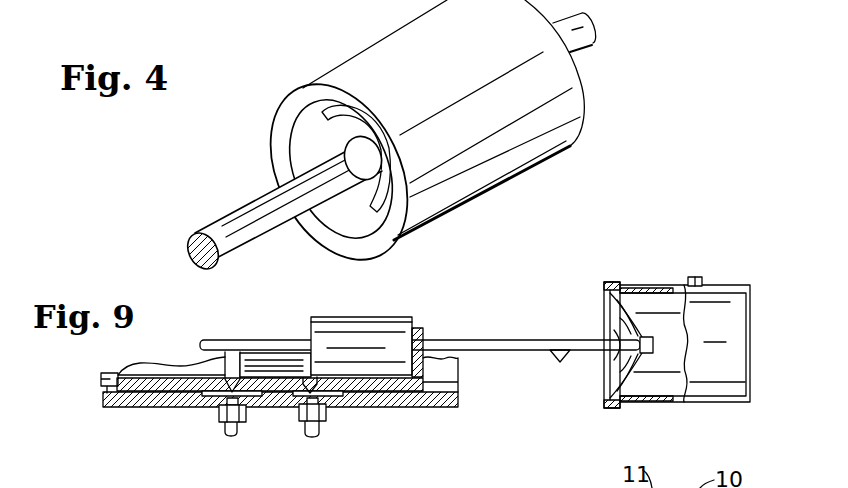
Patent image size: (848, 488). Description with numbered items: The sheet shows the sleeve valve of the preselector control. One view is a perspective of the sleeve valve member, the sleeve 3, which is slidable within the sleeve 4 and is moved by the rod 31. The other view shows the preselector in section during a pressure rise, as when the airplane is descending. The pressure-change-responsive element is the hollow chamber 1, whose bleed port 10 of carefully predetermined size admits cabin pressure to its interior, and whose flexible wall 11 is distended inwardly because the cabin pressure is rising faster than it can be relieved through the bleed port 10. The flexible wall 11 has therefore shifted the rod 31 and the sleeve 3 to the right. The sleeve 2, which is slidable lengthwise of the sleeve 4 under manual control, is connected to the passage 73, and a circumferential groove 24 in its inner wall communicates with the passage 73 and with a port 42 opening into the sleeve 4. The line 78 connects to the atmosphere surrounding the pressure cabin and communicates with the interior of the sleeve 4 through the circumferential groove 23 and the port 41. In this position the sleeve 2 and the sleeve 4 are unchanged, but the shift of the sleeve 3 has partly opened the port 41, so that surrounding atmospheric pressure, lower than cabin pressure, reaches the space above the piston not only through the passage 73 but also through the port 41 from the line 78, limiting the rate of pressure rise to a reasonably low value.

In FIG. 9, the hollow chamber 1 is at (742, 328).
In FIG. 9, the sleeve 2 is at (130, 407).
In FIG. 4, the sleeve 3 is at (447, 197).
In FIG. 9, the sleeve 3 is at (387, 323).
In FIG. 9, the sleeve 4 is at (173, 388).
In FIG. 9, the bleed port 10 is at (696, 277).
In FIG. 9, the flexible wall 11 is at (620, 379).
In FIG. 9, the circumferential groove 23 is at (328, 403).
In FIG. 9, the circumferential groove 24 is at (219, 395).
In FIG. 4, the rod 31 is at (238, 240).
In FIG. 9, the port 41 is at (357, 405).
In FIG. 9, the port 42 is at (249, 396).
In FIG. 9, the passage 73 is at (233, 437).
In FIG. 9, the line 78 is at (310, 440).